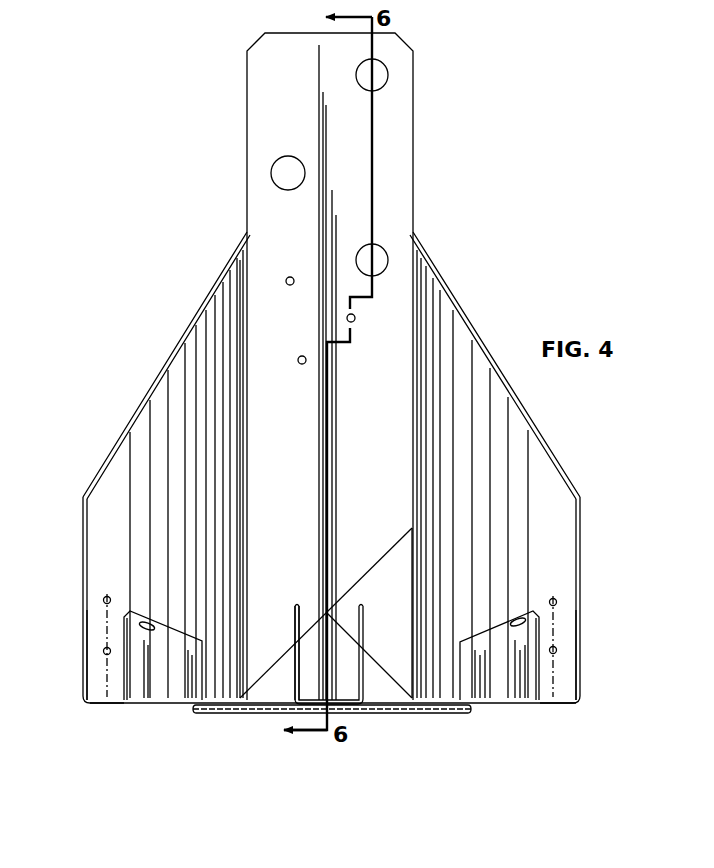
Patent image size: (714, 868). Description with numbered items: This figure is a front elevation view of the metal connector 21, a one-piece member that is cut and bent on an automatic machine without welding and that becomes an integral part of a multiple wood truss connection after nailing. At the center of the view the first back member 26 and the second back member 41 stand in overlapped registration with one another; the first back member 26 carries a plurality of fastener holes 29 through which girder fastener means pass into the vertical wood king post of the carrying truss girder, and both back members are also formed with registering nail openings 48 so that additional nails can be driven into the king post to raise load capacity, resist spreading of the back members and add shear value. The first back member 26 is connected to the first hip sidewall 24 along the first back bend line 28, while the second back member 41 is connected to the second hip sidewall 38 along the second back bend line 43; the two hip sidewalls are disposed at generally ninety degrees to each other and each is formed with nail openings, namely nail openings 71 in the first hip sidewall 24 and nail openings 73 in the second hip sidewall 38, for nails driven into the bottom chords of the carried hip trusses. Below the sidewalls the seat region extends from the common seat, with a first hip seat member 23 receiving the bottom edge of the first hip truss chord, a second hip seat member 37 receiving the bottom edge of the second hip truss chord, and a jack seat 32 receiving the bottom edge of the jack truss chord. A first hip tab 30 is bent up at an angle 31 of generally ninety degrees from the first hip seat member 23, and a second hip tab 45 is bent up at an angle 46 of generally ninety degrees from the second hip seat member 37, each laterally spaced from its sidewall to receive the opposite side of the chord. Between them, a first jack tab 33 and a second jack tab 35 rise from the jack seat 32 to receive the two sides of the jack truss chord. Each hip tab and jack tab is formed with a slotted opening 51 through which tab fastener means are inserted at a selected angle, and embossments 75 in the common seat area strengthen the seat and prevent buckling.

The metal connector 21 is at (476, 320).
The first hip seat member 23 is at (117, 698).
The first hip sidewall 24 is at (126, 432).
The first back member 26 is at (268, 112).
The first back bend line 28 is at (247, 441).
The fastener holes 29 is at (362, 248).
The first hip tab 30 is at (172, 648).
The angle 31 is at (121, 676).
The jack seat 32 is at (354, 701).
The first jack tab 33 is at (295, 619).
The second jack tab 35 is at (355, 615).
The second hip seat member 37 is at (567, 700).
The second hip sidewall 38 is at (582, 513).
The second back member 41 is at (385, 613).
The second back bend line 43 is at (410, 647).
The second hip tab 45 is at (492, 636).
The angle 46 is at (544, 678).
The nail openings 48 is at (347, 316).
The slotted opening 51 is at (517, 617).
The nail openings 71 is at (104, 649).
The nail openings 73 is at (558, 648).
The embossments 75 is at (378, 713).